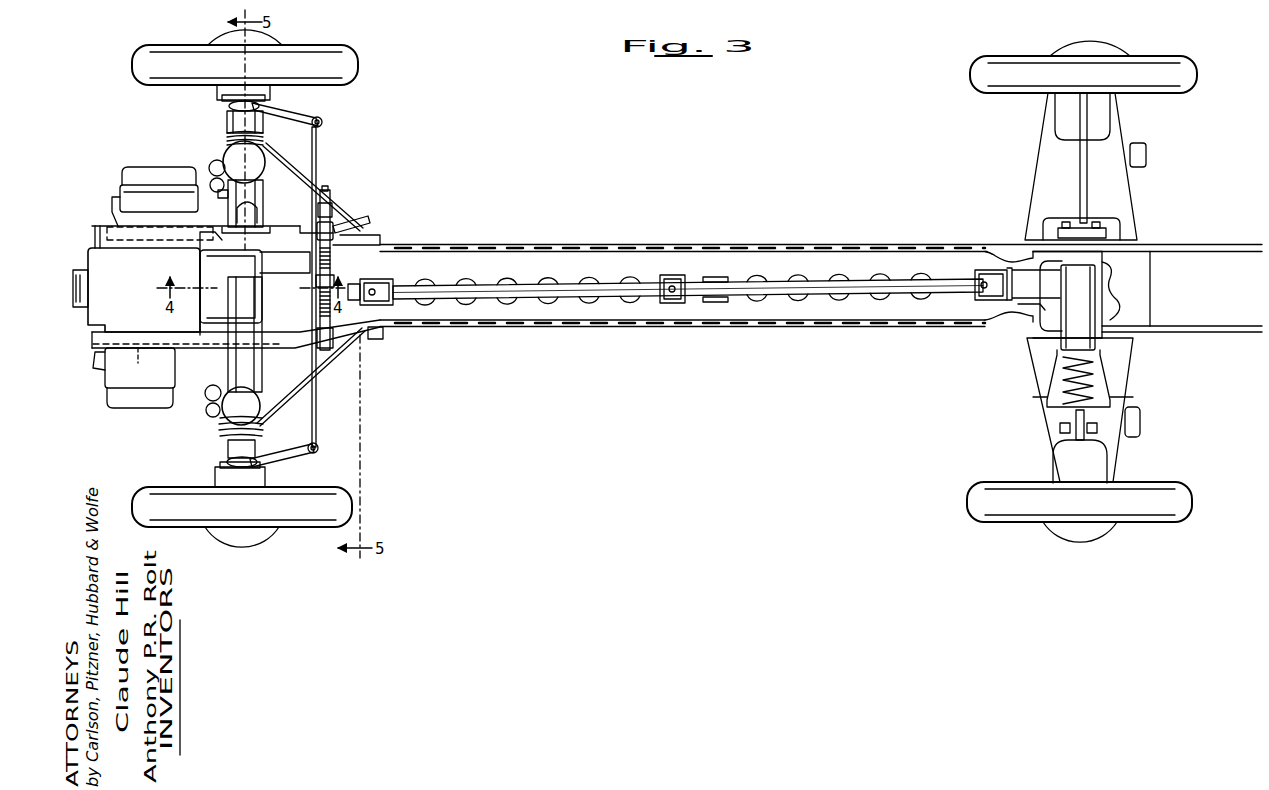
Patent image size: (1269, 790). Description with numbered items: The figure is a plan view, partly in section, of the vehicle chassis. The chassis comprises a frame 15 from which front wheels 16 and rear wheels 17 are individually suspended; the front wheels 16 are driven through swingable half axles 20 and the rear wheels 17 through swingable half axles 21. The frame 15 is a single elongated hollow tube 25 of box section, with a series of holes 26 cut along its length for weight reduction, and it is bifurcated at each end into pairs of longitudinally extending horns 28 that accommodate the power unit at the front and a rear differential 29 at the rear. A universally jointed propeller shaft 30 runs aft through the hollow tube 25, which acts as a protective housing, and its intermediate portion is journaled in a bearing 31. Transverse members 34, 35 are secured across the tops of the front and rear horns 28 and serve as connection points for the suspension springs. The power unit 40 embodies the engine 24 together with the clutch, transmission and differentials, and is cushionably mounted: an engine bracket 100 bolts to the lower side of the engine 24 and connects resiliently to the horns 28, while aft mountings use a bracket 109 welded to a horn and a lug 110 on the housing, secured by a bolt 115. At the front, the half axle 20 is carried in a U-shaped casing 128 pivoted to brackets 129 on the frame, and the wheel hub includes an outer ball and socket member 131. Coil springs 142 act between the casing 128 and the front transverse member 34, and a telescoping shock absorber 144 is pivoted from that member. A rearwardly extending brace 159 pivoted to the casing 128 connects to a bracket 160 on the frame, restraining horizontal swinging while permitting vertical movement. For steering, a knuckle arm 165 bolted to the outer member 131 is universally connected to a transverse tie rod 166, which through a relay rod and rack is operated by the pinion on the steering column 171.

The frame 15 is at (590, 245).
The front wheels 16 is at (358, 68).
The rear wheels 17 is at (980, 66).
The front half axle 20 is at (243, 210).
The rear half axle 21 is at (1081, 176).
The engine 24 is at (132, 170).
The hollow tube 25 is at (745, 246).
The holes 26 is at (470, 283).
The horns 28 is at (113, 226).
The rear differential 29 is at (1112, 271).
The propeller shaft 30 is at (497, 300).
The bearing 31 is at (714, 303).
The front transverse member 34 is at (247, 367).
The rear transverse member 35 is at (1095, 306).
The power unit 40 is at (158, 239).
The engine bracket 100 is at (98, 244).
The bracket 109 is at (231, 283).
The lug 110 is at (317, 286).
The bolt 115 is at (317, 270).
The U-shaped casing 128 is at (262, 199).
The brackets 129 is at (271, 219).
The outer ball and socket member 131 is at (228, 106).
The coil springs 142 is at (221, 435).
The shock absorber 144 is at (210, 166).
The brace 159 is at (300, 177).
The bracket 160 is at (375, 331).
The steering knuckle arm 165 is at (299, 118).
The tie rod 166 is at (320, 436).
The steering column 171 is at (362, 222).